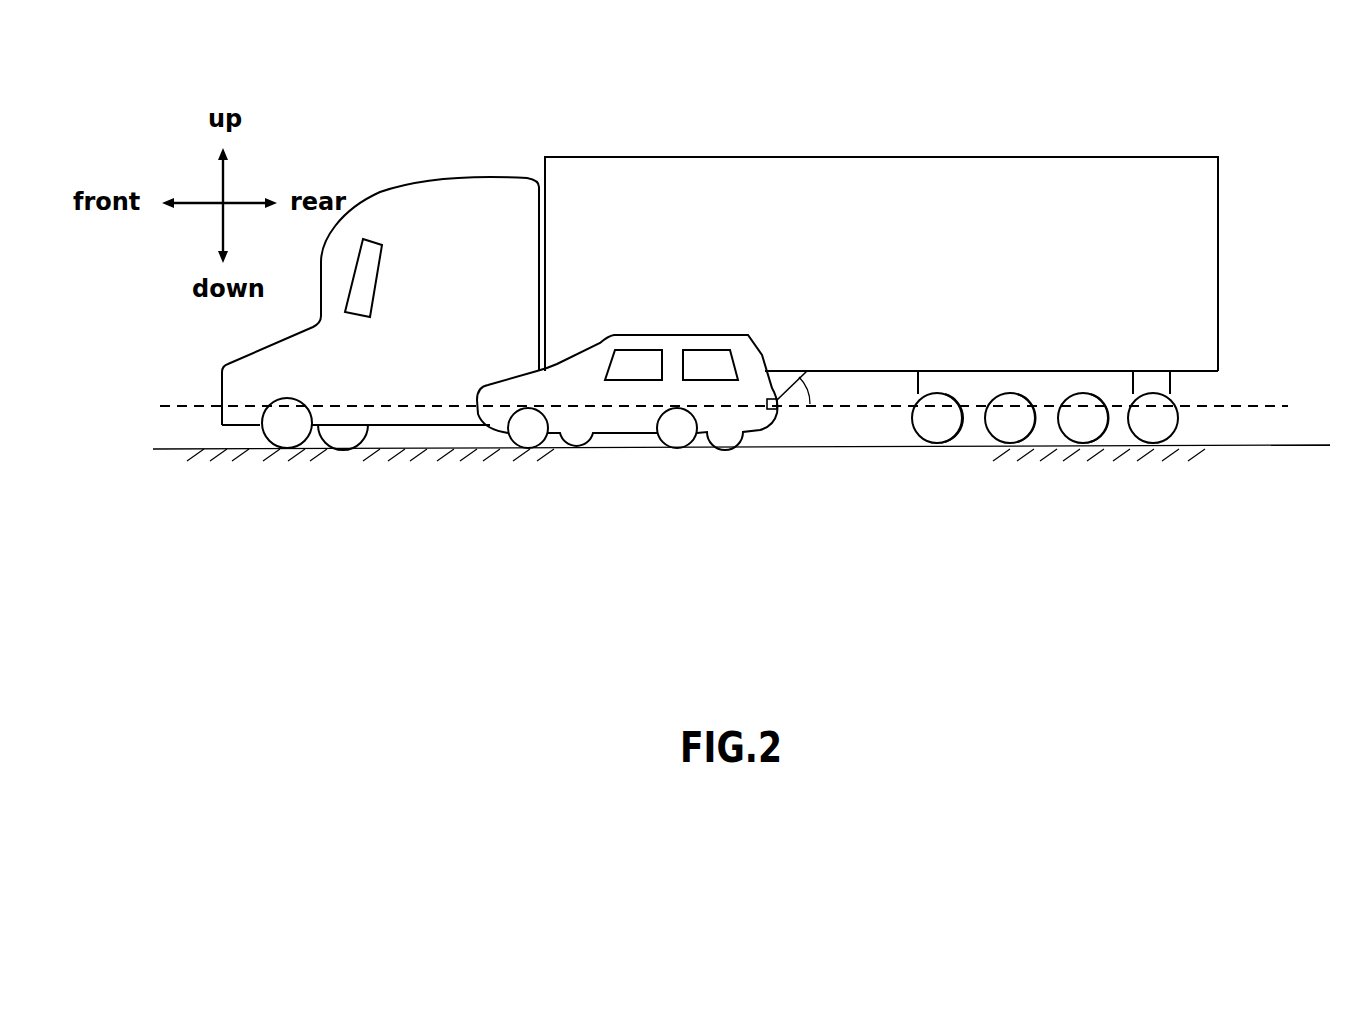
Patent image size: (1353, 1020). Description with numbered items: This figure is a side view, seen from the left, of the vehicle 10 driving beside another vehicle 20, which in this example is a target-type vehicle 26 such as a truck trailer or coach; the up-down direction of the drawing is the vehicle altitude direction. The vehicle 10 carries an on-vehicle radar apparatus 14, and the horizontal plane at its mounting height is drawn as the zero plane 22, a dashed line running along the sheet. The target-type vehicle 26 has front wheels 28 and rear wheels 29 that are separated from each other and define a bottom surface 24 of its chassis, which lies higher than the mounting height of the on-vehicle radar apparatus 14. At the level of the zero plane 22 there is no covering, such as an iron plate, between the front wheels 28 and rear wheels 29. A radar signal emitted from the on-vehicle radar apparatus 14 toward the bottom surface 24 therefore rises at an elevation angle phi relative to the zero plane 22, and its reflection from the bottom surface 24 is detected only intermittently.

The vehicle 10 is at (627, 402).
The on-vehicle radar apparatus 14 is at (775, 400).
The other vehicle 20 is at (763, 329).
The target-type vehicle 26 is at (1205, 192).
The zero plane 22 is at (1255, 402).
The bottom surface 24 is at (868, 371).
The front wheels 28 is at (557, 440).
The rear wheels 29 is at (935, 445).